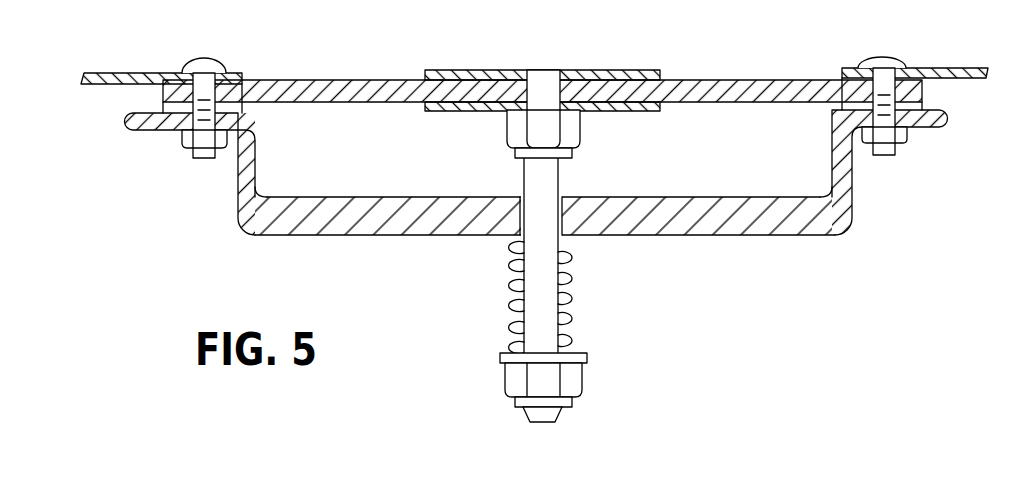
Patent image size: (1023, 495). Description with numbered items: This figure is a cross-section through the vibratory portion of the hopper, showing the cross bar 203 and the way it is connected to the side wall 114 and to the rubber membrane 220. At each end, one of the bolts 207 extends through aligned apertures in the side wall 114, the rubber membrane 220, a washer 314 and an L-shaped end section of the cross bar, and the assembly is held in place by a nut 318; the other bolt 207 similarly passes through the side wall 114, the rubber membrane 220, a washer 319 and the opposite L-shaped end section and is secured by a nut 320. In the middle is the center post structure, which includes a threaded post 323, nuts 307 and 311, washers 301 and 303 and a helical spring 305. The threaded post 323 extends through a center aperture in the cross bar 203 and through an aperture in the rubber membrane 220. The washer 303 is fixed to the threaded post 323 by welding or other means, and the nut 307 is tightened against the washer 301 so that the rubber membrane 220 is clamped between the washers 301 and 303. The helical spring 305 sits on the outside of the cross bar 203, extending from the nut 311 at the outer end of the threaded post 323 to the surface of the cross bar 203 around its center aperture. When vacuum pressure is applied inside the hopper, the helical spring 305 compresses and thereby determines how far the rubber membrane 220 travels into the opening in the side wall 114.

The side wall 114 is at (163, 73).
The bolts 207 is at (202, 58).
The rubber membrane 220 is at (367, 103).
The washer 303 is at (462, 70).
The washer 301 is at (442, 112).
The nut 307 is at (507, 113).
The threaded post 323 is at (560, 183).
The helical spring 305 is at (578, 347).
The nut 311 is at (582, 382).
The cross bar 203 is at (817, 234).
The washer 314 is at (163, 107).
The nut 318 is at (180, 138).
The washer 319 is at (838, 108).
The nut 320 is at (912, 138).